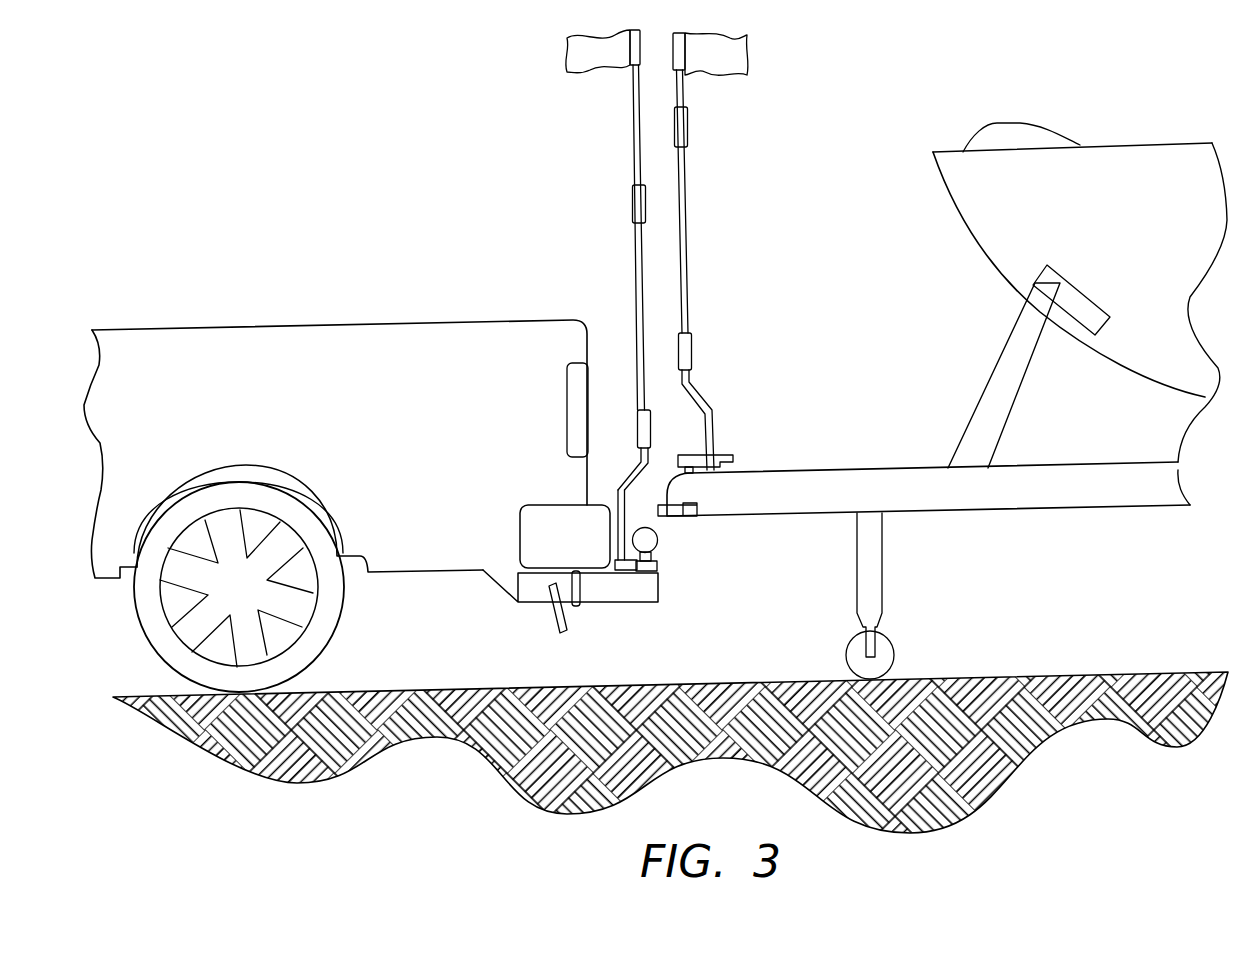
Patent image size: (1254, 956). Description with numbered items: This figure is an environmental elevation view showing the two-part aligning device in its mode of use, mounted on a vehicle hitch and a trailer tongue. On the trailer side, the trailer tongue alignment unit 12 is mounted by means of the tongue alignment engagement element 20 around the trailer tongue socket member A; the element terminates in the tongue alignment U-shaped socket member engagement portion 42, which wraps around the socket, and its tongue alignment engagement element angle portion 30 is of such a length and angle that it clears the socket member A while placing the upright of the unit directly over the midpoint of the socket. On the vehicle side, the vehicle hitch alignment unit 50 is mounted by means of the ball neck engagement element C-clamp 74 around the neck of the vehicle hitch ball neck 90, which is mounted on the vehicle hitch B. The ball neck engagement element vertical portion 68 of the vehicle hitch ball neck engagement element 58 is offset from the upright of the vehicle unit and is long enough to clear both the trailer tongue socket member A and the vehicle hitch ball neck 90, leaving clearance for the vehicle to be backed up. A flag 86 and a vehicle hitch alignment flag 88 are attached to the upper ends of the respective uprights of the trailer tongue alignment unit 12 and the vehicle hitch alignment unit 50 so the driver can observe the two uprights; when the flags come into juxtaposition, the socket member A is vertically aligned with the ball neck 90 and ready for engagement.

The trailer tongue alignment unit 12 is at (757, 251).
The tongue alignment engagement element 20 is at (713, 438).
The tongue alignment engagement element angle portion 30 is at (703, 400).
The tongue alignment U-shaped socket member engagement portion 42 is at (690, 516).
The vehicle hitch alignment unit 50 is at (566, 300).
The vehicle hitch ball neck engagement element 58 is at (637, 480).
The ball neck engagement element vertical portion 68 is at (617, 502).
The ball neck engagement element C-clamp 74 is at (655, 572).
The flag 86 is at (735, 55).
The vehicle hitch alignment flag 88 is at (578, 56).
The vehicle hitch ball neck 90 is at (657, 540).
The trailer tongue socket member A is at (841, 499).
The vehicle hitch B is at (638, 593).